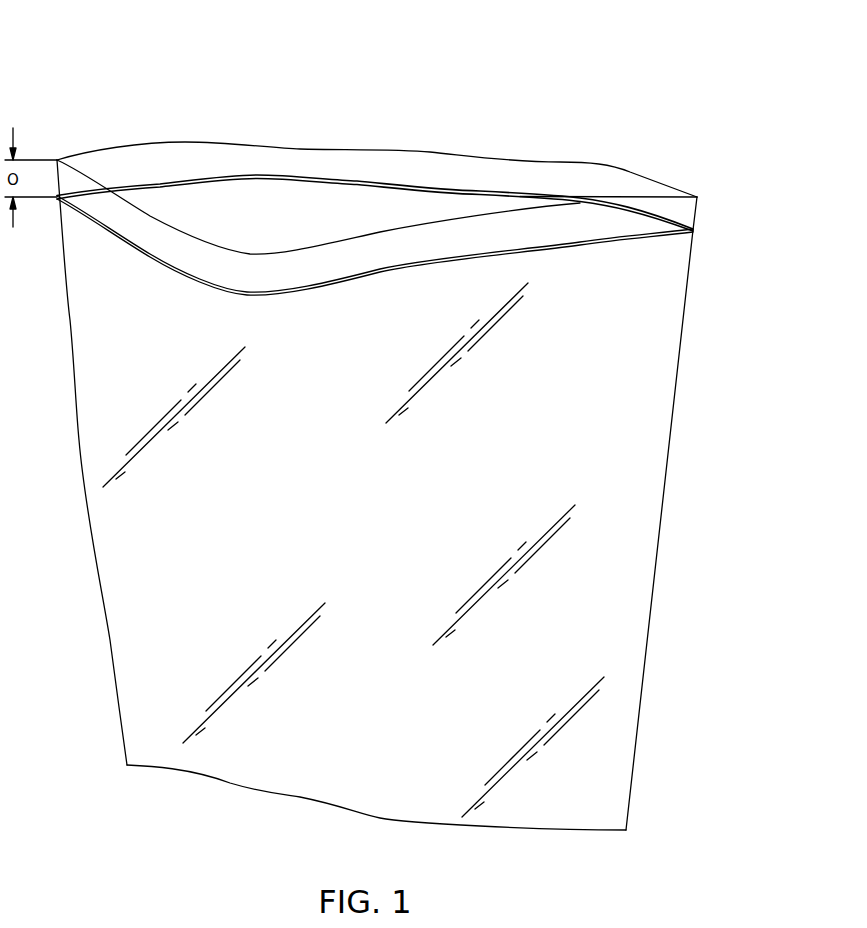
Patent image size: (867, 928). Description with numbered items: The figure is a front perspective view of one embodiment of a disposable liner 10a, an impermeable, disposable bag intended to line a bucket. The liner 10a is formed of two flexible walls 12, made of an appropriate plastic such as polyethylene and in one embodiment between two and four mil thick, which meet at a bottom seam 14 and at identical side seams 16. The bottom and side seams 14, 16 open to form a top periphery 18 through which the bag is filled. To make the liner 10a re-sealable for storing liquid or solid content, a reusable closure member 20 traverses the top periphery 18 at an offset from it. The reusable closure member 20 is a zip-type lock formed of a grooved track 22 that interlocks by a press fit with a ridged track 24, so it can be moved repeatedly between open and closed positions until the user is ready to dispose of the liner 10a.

The disposable liner 10a is at (103, 74).
The flexible walls 12 is at (323, 223).
The bottom seam 14 is at (478, 825).
The side seams 16 is at (87, 498).
The top periphery 18 is at (147, 214).
The reusable closure member 20 is at (713, 222).
The grooved track 22 is at (523, 196).
The ridged track 24 is at (606, 244).